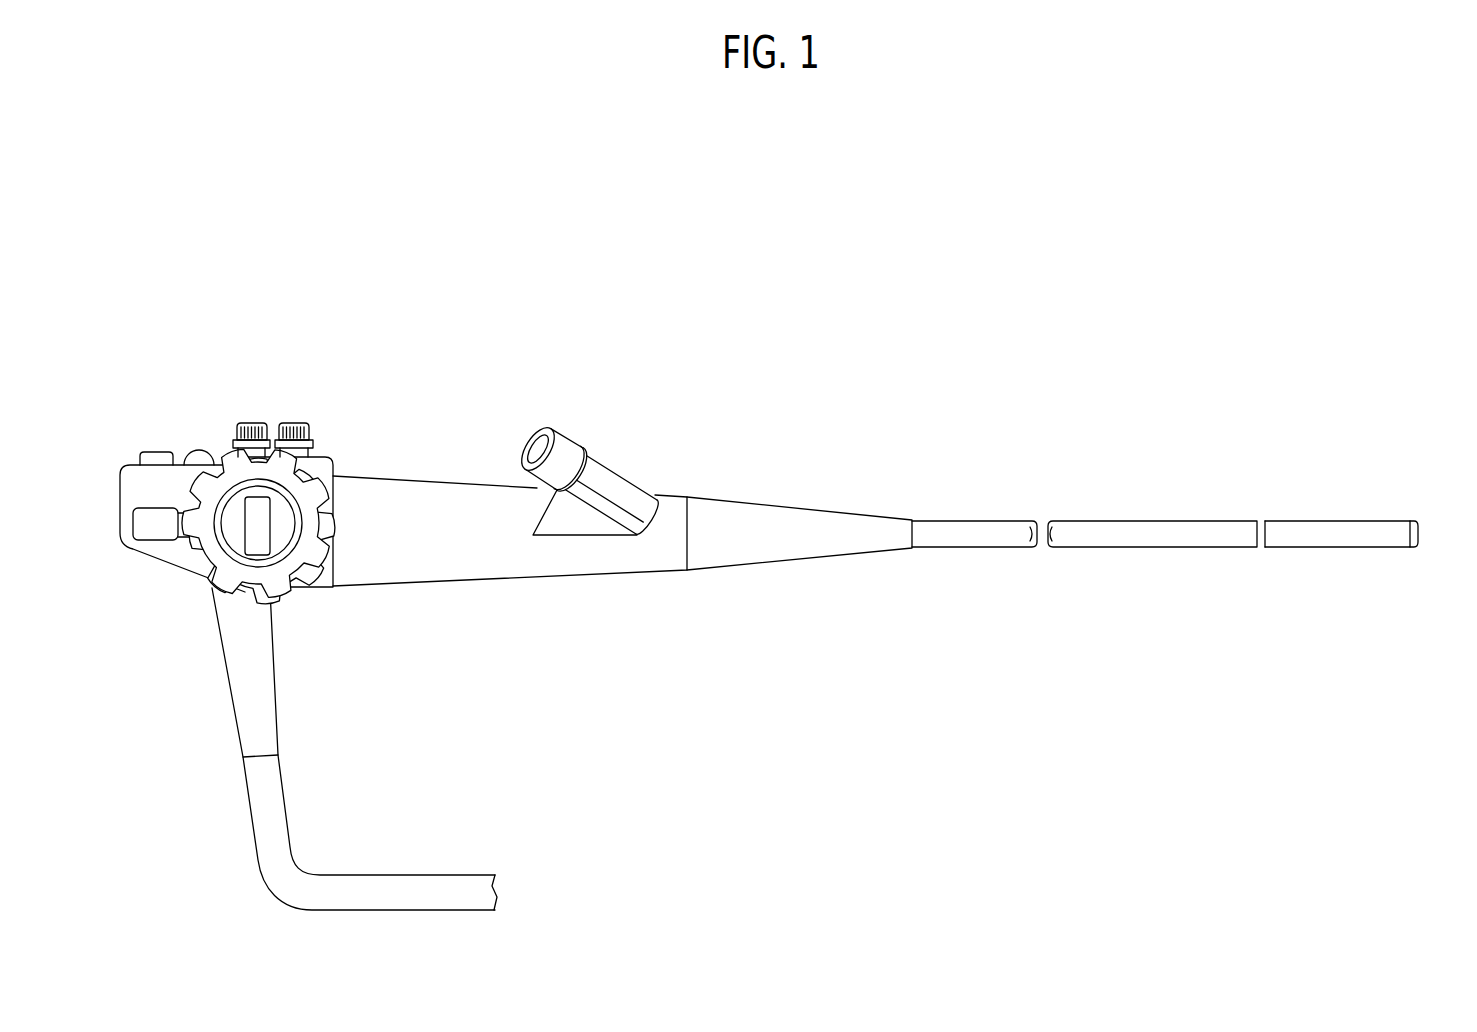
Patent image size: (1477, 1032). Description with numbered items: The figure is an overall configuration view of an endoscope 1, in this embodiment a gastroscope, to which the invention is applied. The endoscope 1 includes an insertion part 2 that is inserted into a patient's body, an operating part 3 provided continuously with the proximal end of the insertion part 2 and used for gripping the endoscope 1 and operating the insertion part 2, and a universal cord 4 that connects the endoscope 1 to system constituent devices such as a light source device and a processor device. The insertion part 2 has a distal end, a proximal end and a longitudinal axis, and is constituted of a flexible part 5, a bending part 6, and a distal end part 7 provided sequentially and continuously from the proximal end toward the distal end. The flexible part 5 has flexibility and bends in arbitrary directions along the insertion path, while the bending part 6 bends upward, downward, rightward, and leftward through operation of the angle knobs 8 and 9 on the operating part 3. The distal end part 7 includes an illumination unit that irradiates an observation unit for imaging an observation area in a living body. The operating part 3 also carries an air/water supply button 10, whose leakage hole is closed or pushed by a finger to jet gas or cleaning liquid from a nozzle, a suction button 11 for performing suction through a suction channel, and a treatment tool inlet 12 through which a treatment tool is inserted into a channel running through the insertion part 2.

The endoscope 1 is at (916, 248).
The insertion part 2 is at (1418, 387).
The operating part 3 is at (452, 333).
The universal cord 4 is at (268, 850).
The flexible part 5 is at (1158, 527).
The bending part 6 is at (1343, 527).
The distal end part 7 is at (1420, 532).
The angle knob 8 is at (315, 543).
The angle knob 9 is at (313, 581).
The air/water supply button 10 is at (296, 420).
The suction button 11 is at (248, 420).
The treatment tool inlet 12 is at (526, 447).